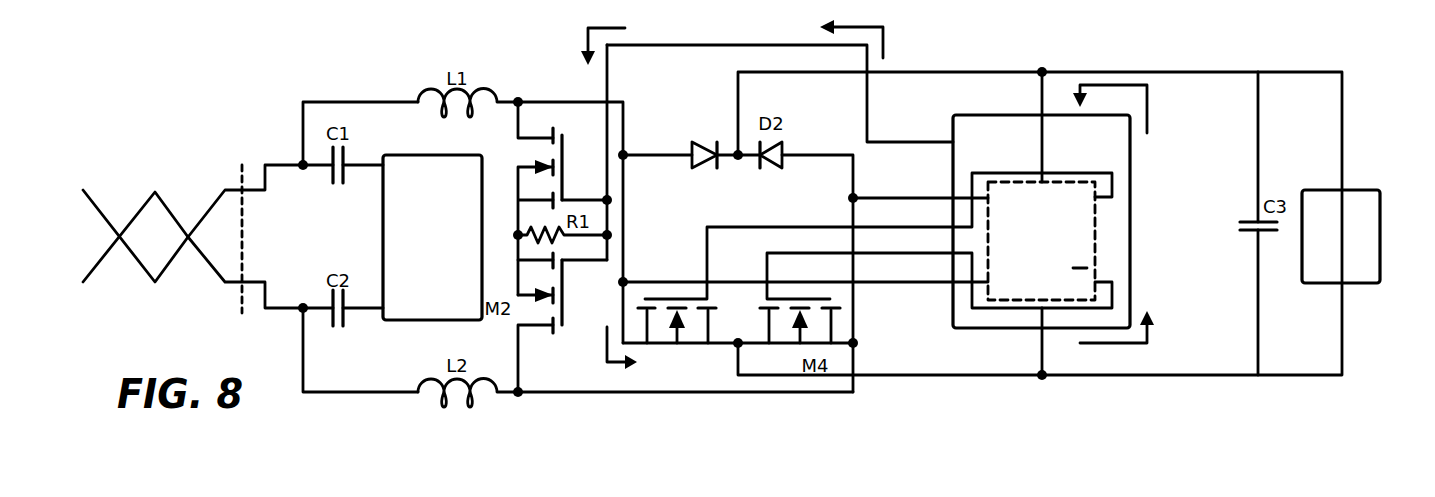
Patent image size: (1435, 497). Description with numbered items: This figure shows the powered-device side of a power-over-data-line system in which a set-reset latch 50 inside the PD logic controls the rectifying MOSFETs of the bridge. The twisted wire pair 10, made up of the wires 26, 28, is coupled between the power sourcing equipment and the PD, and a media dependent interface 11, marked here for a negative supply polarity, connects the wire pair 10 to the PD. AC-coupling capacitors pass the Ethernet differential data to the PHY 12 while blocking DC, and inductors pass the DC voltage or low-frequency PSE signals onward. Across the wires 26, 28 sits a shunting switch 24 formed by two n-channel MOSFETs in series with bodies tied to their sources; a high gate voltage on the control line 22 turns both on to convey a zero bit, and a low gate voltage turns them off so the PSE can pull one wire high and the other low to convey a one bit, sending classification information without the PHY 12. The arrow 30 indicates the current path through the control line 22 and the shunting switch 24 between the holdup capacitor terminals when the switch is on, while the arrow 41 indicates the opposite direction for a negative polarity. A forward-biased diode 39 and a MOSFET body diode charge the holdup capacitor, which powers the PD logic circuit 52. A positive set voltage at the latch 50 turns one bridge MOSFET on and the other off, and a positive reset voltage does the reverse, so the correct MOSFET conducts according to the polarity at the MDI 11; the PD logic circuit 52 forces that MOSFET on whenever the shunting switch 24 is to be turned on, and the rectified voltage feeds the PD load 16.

The twisted wire pair 10 is at (136, 292).
The media dependent interface 11 is at (237, 295).
The PHY 12 is at (455, 153).
The PD load 16 is at (1330, 190).
The control line 22 is at (712, 45).
The shunting switch 24 is at (577, 130).
The wire 26 is at (212, 205).
The wire 28 is at (212, 268).
The arrow 30 is at (885, 50).
The diode D1 39 is at (686, 107).
The arrow 41 is at (605, 347).
The set-reset latch 50 is at (1095, 232).
The PD logic circuit 52 is at (902, 223).